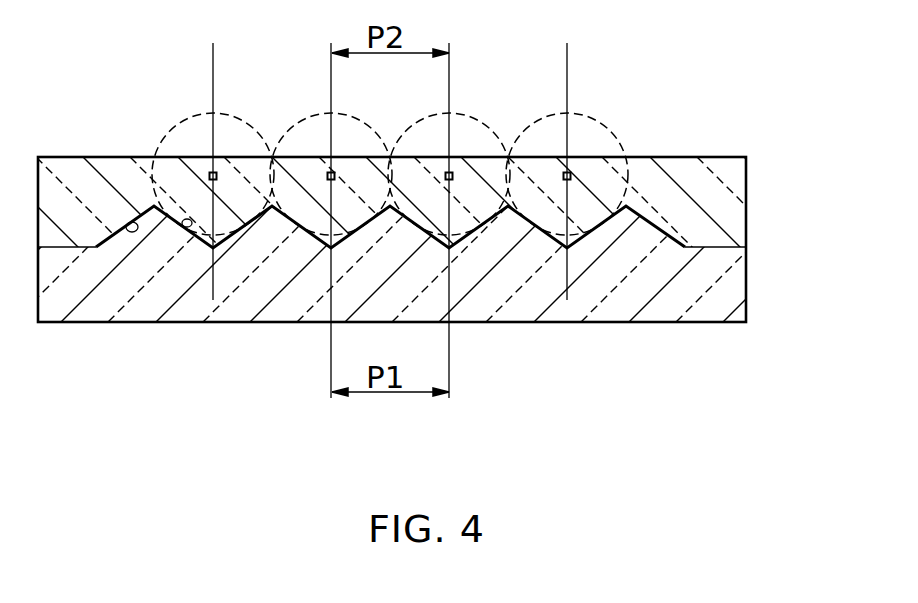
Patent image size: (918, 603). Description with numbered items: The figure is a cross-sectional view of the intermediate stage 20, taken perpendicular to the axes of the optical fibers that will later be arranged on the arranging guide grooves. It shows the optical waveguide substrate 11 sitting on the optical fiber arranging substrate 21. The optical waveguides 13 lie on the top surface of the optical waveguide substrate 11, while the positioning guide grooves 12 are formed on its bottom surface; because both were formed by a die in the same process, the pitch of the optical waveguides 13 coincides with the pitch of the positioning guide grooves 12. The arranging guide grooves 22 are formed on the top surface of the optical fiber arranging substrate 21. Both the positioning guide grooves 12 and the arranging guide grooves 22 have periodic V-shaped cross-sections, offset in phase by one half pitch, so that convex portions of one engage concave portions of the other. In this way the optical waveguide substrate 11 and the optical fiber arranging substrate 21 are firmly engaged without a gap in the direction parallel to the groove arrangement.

The intermediate stage 20 is at (752, 222).
The optical waveguide substrate 11 is at (690, 157).
The optical fiber arranging substrate 21 is at (657, 322).
The positioning guide grooves 12 is at (140, 218).
The optical waveguides 13 is at (237, 172).
The arranging guide grooves 22 is at (179, 221).